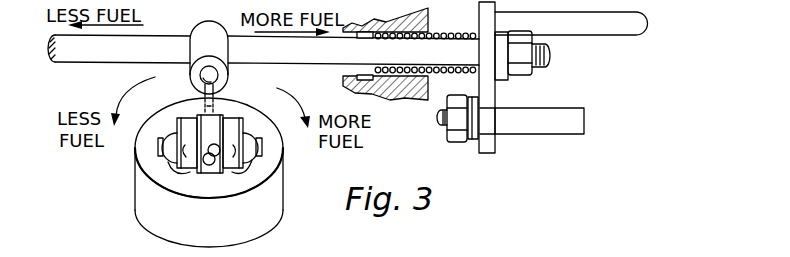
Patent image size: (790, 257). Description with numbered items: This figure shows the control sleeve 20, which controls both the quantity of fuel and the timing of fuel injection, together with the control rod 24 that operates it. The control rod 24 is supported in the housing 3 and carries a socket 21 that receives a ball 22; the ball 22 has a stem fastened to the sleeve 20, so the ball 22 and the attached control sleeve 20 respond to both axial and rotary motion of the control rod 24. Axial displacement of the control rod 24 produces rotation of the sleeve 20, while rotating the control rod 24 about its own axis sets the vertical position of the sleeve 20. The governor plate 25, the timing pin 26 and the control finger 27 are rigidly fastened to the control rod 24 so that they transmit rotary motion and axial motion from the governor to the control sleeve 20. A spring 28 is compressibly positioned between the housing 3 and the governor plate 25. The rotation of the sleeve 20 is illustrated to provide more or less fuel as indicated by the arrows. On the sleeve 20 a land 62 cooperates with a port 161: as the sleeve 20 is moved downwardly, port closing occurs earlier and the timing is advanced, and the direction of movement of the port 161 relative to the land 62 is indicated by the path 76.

The housing 3 is at (430, 14).
The control sleeve 20 is at (137, 178).
The socket 21 is at (227, 78).
The ball 22 is at (201, 77).
The control rod 24 is at (310, 65).
The governor plate 25 is at (496, 89).
The timing pin 26 is at (536, 134).
The control finger 27 is at (601, 36).
The spring 28 is at (447, 33).
The land 62 is at (200, 128).
The path 76 is at (241, 150).
The port 161 is at (219, 152).